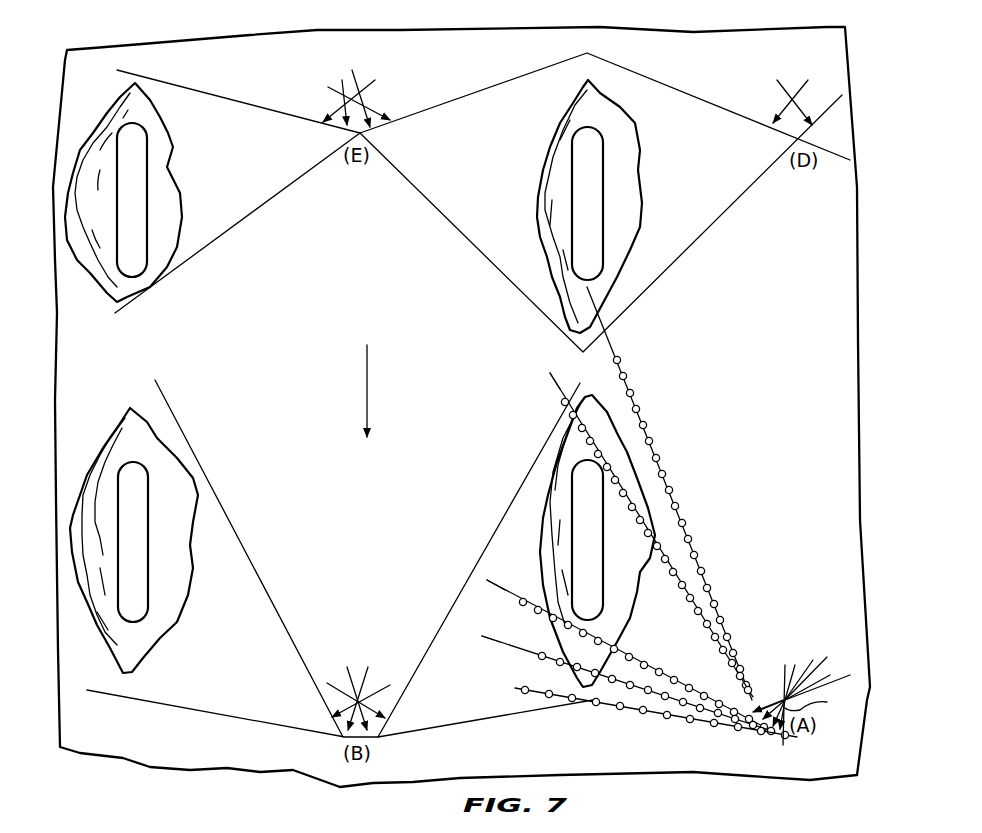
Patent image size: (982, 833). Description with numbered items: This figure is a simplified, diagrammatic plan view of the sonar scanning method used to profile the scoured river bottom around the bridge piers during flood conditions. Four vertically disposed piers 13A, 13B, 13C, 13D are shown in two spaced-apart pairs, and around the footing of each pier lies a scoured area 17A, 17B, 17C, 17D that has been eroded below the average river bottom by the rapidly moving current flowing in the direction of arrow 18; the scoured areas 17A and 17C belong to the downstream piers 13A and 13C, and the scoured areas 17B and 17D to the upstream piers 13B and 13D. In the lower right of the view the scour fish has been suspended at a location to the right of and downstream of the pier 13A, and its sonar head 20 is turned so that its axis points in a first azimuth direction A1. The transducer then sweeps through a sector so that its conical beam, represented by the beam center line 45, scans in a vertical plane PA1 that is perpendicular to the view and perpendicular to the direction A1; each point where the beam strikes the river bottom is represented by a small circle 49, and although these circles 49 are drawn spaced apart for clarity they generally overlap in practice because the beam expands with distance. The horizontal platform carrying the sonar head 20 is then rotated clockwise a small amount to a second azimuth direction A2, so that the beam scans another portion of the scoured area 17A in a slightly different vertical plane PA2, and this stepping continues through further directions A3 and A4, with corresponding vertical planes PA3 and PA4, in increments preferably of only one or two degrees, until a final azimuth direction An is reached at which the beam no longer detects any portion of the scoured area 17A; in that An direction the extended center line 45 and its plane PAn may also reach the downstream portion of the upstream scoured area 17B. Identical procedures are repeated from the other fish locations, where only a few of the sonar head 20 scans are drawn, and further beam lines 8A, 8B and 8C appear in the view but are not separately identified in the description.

The pier 13A is at (572, 480).
The pier 13B is at (603, 180).
The pier 13C is at (147, 505).
The pier 13D is at (147, 172).
The scoured area 17A is at (543, 565).
The scoured area 17B is at (540, 230).
The scoured area 17C is at (188, 595).
The scoured area 17D is at (177, 243).
The beam center line 45 is at (290, 113).
The sonar head 20 is at (375, 67).
The arrow 18 is at (372, 386).
The small circle 49 is at (649, 441).
The scan line A 8A is at (498, 648).
The scan line B 8B is at (508, 594).
The scan line C 8C is at (556, 390).
The beam path n PAn is at (637, 398).
The beam path 4 PA4 is at (684, 574).
The beam path 3 PA3 is at (650, 641).
The vertical plane PA2 is at (647, 696).
The vertical plane PA1 is at (705, 727).
The azimuth direction An is at (757, 711).
The azimuth direction A1 is at (778, 716).
The azimuth direction A2 is at (819, 705).
The azimuth direction A3 is at (813, 670).
The azimuth direction A4 is at (823, 681).